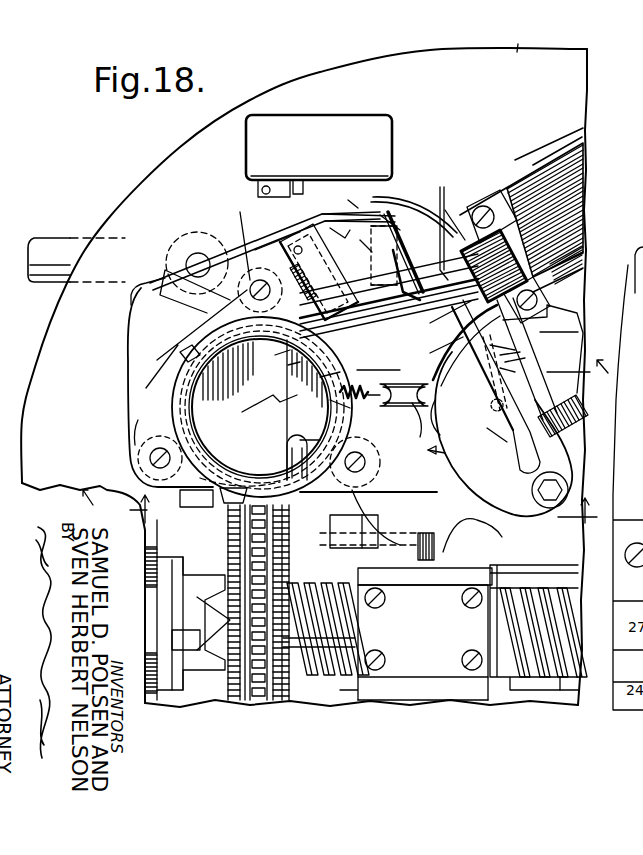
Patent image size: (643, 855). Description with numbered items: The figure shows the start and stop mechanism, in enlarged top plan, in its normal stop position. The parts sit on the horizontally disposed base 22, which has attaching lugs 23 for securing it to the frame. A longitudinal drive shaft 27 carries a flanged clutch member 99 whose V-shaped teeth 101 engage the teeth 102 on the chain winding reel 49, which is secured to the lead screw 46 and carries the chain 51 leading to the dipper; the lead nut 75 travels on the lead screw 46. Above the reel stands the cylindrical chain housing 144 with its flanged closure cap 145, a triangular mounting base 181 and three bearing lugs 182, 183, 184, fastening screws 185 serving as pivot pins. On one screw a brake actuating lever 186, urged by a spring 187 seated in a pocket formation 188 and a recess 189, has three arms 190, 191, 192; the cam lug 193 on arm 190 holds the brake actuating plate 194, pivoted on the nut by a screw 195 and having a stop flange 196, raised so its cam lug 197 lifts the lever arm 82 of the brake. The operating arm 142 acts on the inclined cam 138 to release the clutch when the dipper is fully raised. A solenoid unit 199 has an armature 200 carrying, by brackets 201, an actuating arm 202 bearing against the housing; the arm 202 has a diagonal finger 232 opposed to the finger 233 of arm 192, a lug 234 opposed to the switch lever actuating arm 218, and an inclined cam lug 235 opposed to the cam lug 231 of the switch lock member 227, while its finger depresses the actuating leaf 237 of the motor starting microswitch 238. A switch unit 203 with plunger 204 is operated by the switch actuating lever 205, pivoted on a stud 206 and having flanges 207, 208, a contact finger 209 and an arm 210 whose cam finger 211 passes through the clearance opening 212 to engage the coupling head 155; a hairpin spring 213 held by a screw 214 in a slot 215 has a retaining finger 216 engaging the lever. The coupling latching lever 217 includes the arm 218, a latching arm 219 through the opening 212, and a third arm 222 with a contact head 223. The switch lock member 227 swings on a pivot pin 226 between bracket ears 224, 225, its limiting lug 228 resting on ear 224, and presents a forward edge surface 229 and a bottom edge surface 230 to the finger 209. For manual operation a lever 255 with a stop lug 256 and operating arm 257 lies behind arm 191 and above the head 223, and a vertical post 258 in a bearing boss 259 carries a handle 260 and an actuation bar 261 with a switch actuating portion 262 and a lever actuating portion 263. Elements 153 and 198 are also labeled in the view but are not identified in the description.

The base 22 is at (355, 275).
The attaching lugs 23 is at (338, 429).
The drive shaft 27 is at (182, 650).
The lead screw 46 is at (527, 677).
The chain winding reel 49 is at (222, 693).
The chain 51 is at (248, 697).
The lead nut 75 is at (420, 667).
The lever arm 82 is at (532, 552).
The flanged clutch member 99 is at (163, 693).
The V-shaped teeth 101 is at (182, 693).
The V-shaped teeth 102 is at (203, 613).
The inclined cam 138 is at (368, 545).
The operating arm 142 is at (290, 447).
The chain housing 144 is at (172, 385).
The flanged closure cap 145 is at (197, 398).
The pin 153 is at (190, 357).
The coupling head 155 is at (297, 420).
The mounting base 181 is at (372, 415).
The bearing lug 182 is at (367, 470).
The bearing lug 183 is at (147, 443).
The bearing lug 184 is at (245, 263).
The fastening screws 185 is at (373, 483).
The brake actuating lever 186 is at (452, 455).
The spring 187 is at (347, 405).
The pocket formation 188 is at (415, 427).
The recess 189 is at (311, 429).
The arm 190 is at (453, 508).
The arm 191 is at (227, 500).
The arm 192 is at (503, 370).
The cam lug 193 is at (477, 527).
The brake actuating plate 194 is at (370, 529).
The screw 195 is at (392, 587).
The movement limiting stop flange 196 is at (437, 590).
The cam lug 197 is at (477, 568).
The opening 198 is at (260, 407).
The solenoid unit 199 is at (565, 200).
The armature 200 is at (500, 228).
The brackets 201 is at (514, 255).
The actuating arm 202 is at (412, 235).
The switch unit 203 is at (577, 312).
The operating plunger 204 is at (580, 425).
The switch actuating lever 205 is at (513, 470).
The pivot stud 206 is at (563, 473).
The upstanding flange 207 is at (525, 425).
The upstanding flange 208 is at (507, 441).
The contact finger 209 is at (388, 213).
The arm 210 is at (370, 383).
The cam finger portion 211 is at (320, 377).
The clearance opening 212 is at (267, 356).
The hairpin spring 213 is at (530, 377).
The screw 214 is at (500, 386).
The slot 215 is at (500, 348).
The bent retaining finger 216 is at (425, 300).
The coupling latching lever 217 is at (318, 232).
The switch lever actuating arm 218 is at (455, 400).
The latching arm 219 is at (288, 365).
The third arm 222 is at (196, 257).
The contact head 223 is at (163, 277).
The bracket ear 224 is at (280, 193).
The bracket ear 225 is at (322, 272).
The pivot pin 226 is at (275, 226).
The switch lock member 227 is at (369, 253).
The movement limiting lug 228 is at (335, 233).
The forward edge surface 229 is at (430, 196).
The bottom edge surface 230 is at (395, 187).
The cam lug 231 is at (406, 253).
The diagonally extending finger 232 is at (528, 360).
The downwardly extending finger 233 is at (522, 352).
The downwardly projecting lug 234 is at (404, 395).
The inclined cam lug 235 is at (380, 255).
The actuating leaf 237 is at (353, 197).
The microswitch 238 is at (340, 128).
The lever 255 is at (217, 475).
The stop lug 256 is at (182, 523).
The operating arm 257 is at (128, 357).
The vertical post 258 is at (187, 258).
The bearing boss 259 is at (197, 233).
The operating handle 260 is at (60, 240).
The actuation bar 261 is at (248, 240).
The switch actuating portion 262 is at (358, 211).
The lever actuating portion 263 is at (130, 306).